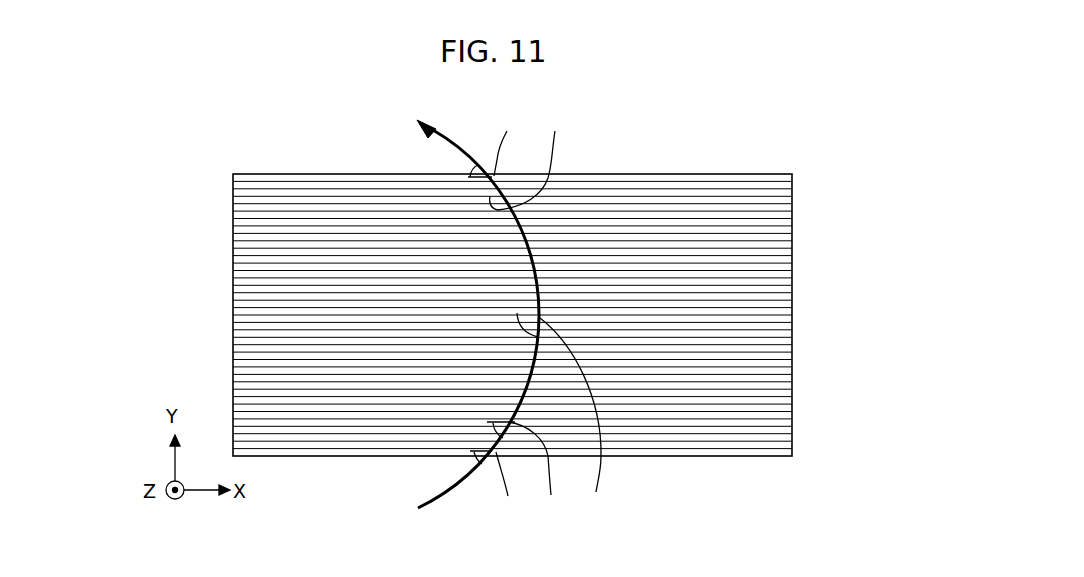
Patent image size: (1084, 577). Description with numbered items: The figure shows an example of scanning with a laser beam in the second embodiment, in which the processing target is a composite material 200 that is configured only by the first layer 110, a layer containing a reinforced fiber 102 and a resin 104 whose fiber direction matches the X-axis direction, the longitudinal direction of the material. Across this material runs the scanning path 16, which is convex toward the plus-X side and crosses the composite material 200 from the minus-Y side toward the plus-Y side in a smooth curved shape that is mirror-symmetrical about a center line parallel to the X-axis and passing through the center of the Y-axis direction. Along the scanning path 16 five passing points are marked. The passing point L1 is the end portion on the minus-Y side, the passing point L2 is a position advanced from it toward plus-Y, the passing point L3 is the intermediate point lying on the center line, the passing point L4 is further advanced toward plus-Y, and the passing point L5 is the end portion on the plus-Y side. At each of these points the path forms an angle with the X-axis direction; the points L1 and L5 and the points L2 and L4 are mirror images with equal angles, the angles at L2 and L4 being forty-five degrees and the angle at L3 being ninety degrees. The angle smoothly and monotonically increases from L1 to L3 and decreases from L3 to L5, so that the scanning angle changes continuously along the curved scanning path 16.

The composite material 200 is at (793, 130).
The first layer 110 is at (790, 316).
The resin 104 is at (683, 438).
The reinforced fiber 102 is at (750, 443).
The scanning path 16 is at (448, 497).
The passing point L1 is at (508, 490).
The passing point L2 is at (538, 475).
The passing point L3 is at (576, 423).
The passing point L4 is at (531, 159).
The passing point L5 is at (506, 142).